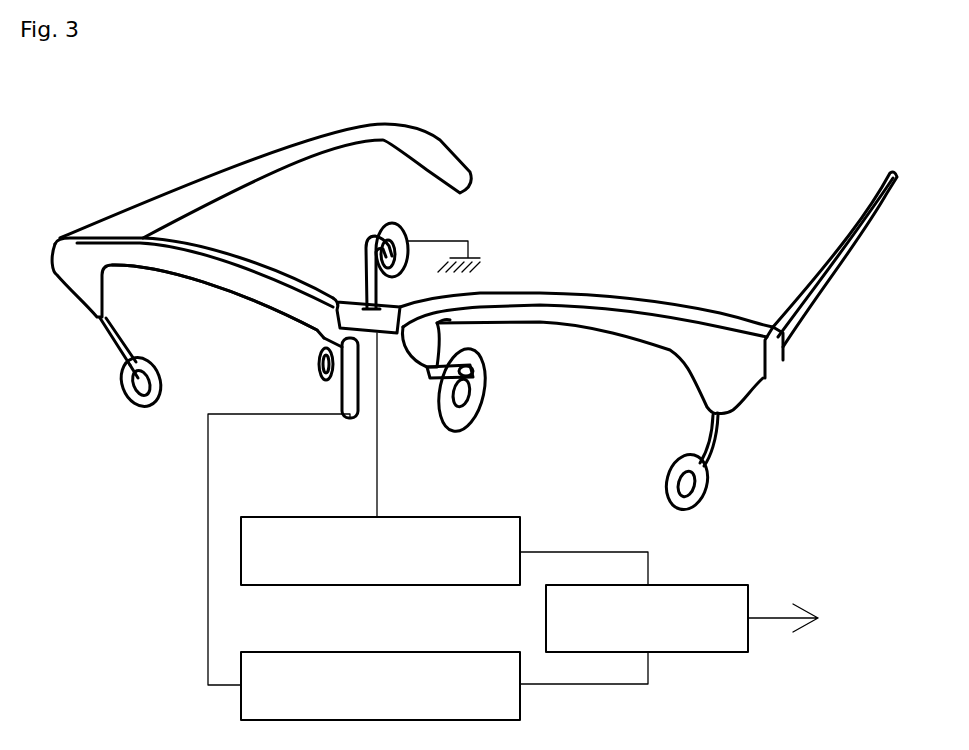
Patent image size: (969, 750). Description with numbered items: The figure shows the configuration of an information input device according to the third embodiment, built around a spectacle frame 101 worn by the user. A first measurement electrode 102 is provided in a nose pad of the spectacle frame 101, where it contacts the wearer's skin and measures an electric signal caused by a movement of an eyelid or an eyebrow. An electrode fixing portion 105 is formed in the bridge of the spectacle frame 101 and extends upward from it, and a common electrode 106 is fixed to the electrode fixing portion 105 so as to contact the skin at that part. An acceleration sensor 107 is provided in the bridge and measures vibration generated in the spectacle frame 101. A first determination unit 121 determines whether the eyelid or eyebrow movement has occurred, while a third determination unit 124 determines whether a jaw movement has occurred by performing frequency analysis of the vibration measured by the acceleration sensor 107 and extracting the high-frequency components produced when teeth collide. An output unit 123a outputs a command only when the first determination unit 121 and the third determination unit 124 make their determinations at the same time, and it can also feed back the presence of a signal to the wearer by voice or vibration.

The spectacle frame 101 is at (572, 235).
The first measurement electrode 102 is at (345, 393).
The electrode fixing portion 105 is at (362, 245).
The common electrode 106 is at (388, 222).
The acceleration sensor 107 is at (322, 330).
The first determination unit 121 is at (412, 651).
The output unit 123a is at (718, 584).
The third determination unit 124 is at (443, 516).